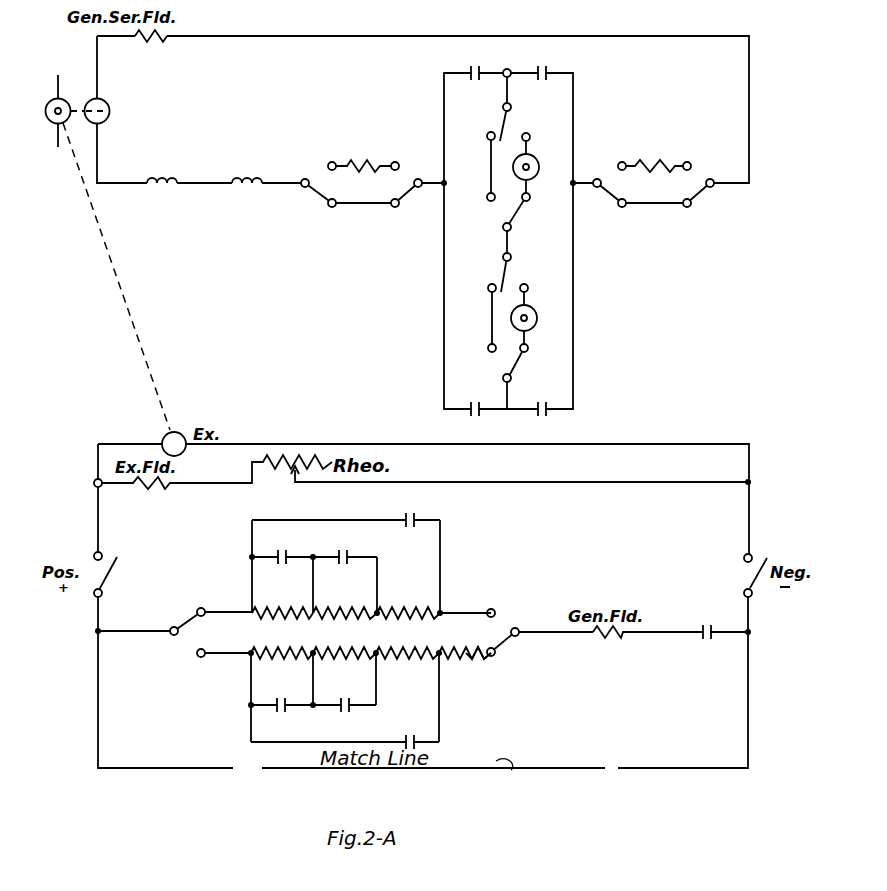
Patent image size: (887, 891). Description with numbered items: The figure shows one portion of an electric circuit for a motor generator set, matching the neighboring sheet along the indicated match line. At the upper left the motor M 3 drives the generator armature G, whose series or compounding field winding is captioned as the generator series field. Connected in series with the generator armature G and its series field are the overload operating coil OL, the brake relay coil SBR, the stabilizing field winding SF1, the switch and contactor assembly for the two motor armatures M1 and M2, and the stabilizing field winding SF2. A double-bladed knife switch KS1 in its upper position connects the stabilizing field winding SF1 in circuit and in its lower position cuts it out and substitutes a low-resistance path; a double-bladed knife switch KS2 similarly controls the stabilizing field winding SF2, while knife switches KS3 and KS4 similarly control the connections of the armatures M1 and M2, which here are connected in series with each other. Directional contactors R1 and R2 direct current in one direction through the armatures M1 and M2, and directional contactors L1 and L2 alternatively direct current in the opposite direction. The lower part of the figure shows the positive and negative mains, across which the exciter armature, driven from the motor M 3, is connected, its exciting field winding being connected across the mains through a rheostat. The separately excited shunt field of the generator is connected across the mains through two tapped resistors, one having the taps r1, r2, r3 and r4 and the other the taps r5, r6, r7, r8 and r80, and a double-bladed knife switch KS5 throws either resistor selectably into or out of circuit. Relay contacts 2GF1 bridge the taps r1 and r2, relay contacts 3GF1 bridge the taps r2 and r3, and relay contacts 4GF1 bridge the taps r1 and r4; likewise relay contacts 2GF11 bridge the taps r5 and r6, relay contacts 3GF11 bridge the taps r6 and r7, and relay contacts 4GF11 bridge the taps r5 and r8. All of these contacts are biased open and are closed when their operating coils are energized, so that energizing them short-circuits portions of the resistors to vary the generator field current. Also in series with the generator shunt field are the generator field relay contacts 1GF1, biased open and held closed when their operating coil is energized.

The motor 3 is at (68, 111).
The generator armature G is at (99, 102).
The overload operating coil OL is at (162, 170).
The brake relay coil SBR is at (244, 170).
The stabilizing field winding SF1 is at (363, 158).
The double-bladed knife switch KS1 is at (361, 193).
The directional contactor L1 is at (471, 65).
The directional contactor R2 is at (539, 65).
The double-bladed knife switch KS3 is at (514, 122).
The motor armature M1 is at (524, 182).
The double-bladed knife switch KS4 is at (519, 317).
The motor armature M2 is at (525, 318).
The directional contactor R1 is at (471, 402).
The directional contactor L2 is at (538, 402).
The stabilizing field winding SF2 is at (654, 157).
The double-bladed knife switch KS2 is at (643, 193).
The double-bladed knife switch KS5 is at (345, 634).
The relay contacts 4GF1 is at (346, 514).
The relay contacts 2GF1 is at (282, 551).
The relay contacts 3GF1 is at (345, 551).
The generator field relay contacts 1GF1 is at (709, 627).
The tap r1 is at (282, 605).
The tap r2 is at (345, 605).
The tap r3 is at (408, 605).
The tap r4 is at (465, 602).
The tap r5 is at (280, 644).
The tap r6 is at (342, 644).
The tap r7 is at (405, 644).
The tap r8 is at (463, 644).
The tap r80 is at (476, 644).
The relay contacts 2GF11 is at (282, 699).
The relay contacts 3GF11 is at (344, 699).
The relay contacts 4GF11 is at (345, 736).